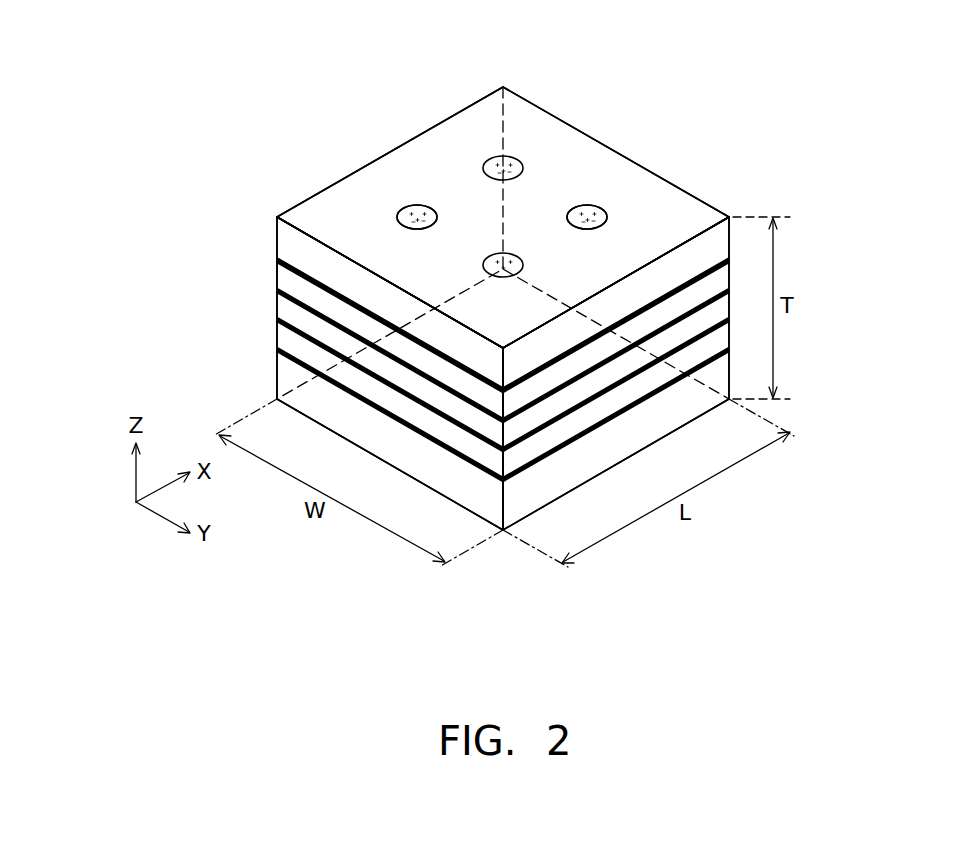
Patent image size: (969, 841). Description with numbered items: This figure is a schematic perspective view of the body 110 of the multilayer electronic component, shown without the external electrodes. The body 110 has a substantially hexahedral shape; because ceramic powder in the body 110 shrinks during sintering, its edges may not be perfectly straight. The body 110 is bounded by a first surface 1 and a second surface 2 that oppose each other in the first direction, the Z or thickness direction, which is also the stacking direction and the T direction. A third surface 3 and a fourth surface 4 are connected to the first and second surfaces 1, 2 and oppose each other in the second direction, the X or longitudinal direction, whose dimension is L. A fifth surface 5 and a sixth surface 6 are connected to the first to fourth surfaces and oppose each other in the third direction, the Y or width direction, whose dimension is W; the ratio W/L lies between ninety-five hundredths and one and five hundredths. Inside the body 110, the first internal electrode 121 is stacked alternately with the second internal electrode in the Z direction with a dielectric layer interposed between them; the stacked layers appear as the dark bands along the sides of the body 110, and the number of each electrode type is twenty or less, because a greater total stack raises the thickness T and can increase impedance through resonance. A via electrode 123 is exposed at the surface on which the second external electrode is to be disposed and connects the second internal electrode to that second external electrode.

The first surface 1 is at (567, 422).
The second surface 2 is at (465, 196).
The third surface 3 is at (393, 370).
The fourth surface 4 is at (578, 186).
The fifth surface 5 is at (614, 372).
The sixth surface 6 is at (405, 186).
The body 110 is at (338, 197).
The first internal electrode 121 is at (310, 281).
The via electrode 123 is at (512, 167).